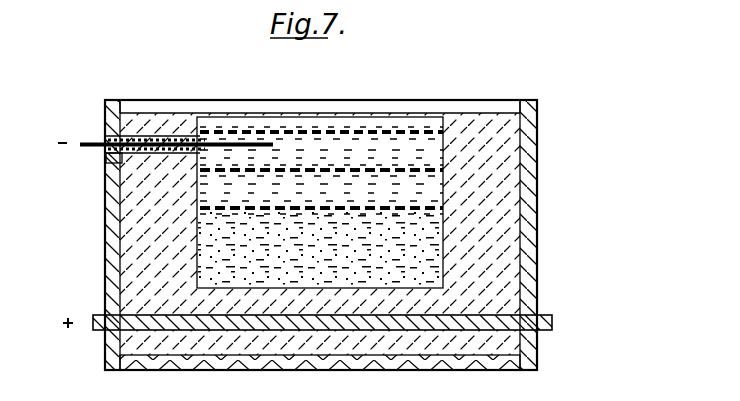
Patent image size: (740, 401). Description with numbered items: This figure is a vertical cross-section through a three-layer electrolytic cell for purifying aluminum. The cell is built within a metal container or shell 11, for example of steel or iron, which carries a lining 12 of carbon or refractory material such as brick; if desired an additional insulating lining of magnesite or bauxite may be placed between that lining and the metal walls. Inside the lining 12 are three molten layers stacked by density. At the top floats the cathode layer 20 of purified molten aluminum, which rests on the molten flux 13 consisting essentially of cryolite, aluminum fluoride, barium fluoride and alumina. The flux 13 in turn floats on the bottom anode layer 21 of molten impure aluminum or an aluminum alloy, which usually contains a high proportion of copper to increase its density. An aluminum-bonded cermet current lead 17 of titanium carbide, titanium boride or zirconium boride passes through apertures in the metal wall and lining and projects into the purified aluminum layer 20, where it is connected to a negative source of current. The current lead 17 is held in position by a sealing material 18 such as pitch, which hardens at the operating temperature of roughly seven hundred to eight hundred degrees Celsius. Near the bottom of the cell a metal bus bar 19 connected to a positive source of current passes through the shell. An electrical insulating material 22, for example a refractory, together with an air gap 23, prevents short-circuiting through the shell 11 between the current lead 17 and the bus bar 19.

The metal container 11 is at (527, 119).
The lining 12 is at (500, 178).
The molten flux 13 is at (328, 199).
The cermet current lead 17 is at (92, 153).
The sealing material 18 is at (110, 140).
The metal bus bar 19 is at (552, 322).
The layer of purified molten aluminum 20 is at (330, 159).
The layer of molten impure aluminum 21 is at (326, 259).
The electrical insulating material 22 is at (110, 170).
The air gap 23 is at (109, 132).